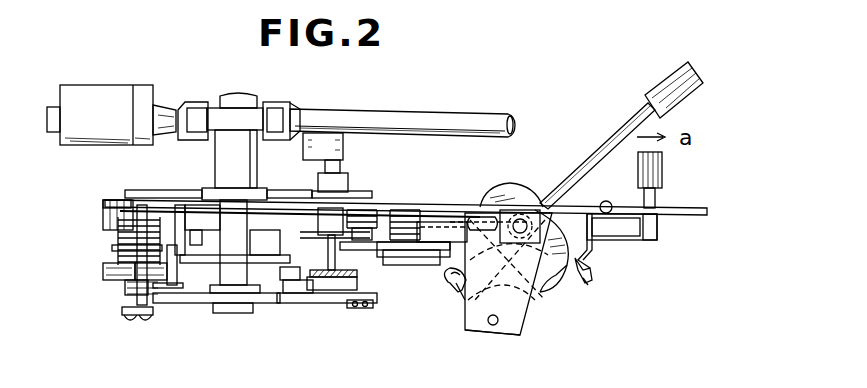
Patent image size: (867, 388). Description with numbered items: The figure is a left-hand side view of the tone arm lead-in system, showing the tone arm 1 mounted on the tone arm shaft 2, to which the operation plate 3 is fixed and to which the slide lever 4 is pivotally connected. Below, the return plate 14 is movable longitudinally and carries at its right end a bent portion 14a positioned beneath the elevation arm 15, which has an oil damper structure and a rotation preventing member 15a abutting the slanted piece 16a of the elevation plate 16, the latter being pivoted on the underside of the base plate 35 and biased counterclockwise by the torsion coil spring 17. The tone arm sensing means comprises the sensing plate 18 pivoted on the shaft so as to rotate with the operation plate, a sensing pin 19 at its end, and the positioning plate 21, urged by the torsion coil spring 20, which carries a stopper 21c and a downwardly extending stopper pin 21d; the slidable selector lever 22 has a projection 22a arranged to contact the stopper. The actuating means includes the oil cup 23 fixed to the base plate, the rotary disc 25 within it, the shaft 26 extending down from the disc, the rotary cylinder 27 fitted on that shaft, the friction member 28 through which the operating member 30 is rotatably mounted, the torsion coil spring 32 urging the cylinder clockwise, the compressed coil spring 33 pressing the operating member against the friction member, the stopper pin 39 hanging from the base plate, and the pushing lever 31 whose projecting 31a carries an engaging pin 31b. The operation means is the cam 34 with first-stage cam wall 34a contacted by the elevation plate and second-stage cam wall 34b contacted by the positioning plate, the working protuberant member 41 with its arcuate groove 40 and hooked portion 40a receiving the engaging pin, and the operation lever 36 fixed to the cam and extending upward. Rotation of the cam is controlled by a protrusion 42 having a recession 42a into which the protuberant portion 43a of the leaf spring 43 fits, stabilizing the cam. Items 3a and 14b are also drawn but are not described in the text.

The tone arm 1 is at (444, 114).
The tone arm shaft 2 is at (228, 290).
The operation plate 3 is at (325, 304).
The chassis upper plate 3a is at (290, 212).
The slide lever 4 is at (355, 310).
The return plate 14 is at (322, 293).
The bent portion 14a is at (368, 306).
The slide plate arm 14b is at (265, 303).
The elevation arm 15 is at (325, 235).
The rotation preventing member 15a is at (380, 252).
The elevation plate 16 is at (440, 250).
The slanted piece 16a is at (382, 210).
The torsion coil spring 17 is at (430, 215).
The sensing plate 18 is at (195, 305).
The sensing pin 19 is at (177, 303).
The torsion coil spring 20 is at (350, 200).
The positioning plate 21 is at (252, 303).
The stopper 21c is at (240, 313).
The stopper pin 21d is at (200, 220).
The selector lever 22 is at (640, 236).
The projection 22a is at (232, 215).
The oil cup 23 is at (155, 205).
The rotary disc 25 is at (108, 212).
The shaft 26 is at (128, 290).
The rotary cylinder 27 is at (112, 250).
The friction member 28 is at (105, 270).
The operating member 30 is at (108, 280).
The pushing lever 31 is at (278, 190).
The projecting 31a is at (477, 332).
The engaging pin 31b is at (495, 335).
The torsion coil spring 32 is at (118, 230).
The compressed coil spring 33 is at (150, 316).
The cam 34 is at (543, 197).
The cam wall 34a is at (548, 280).
The cam wall 34b is at (507, 190).
The base plate 35 is at (672, 210).
The operation lever 36 is at (642, 116).
The stopper pin 39 is at (125, 300).
The arcuate groove 40 is at (462, 304).
The hooked portion 40a is at (453, 290).
The working protuberant member 41 is at (500, 324).
The protrusion 42 is at (588, 274).
The recession 42a is at (585, 286).
The leaf spring 43 is at (606, 201).
The protuberant portion 43a is at (595, 262).